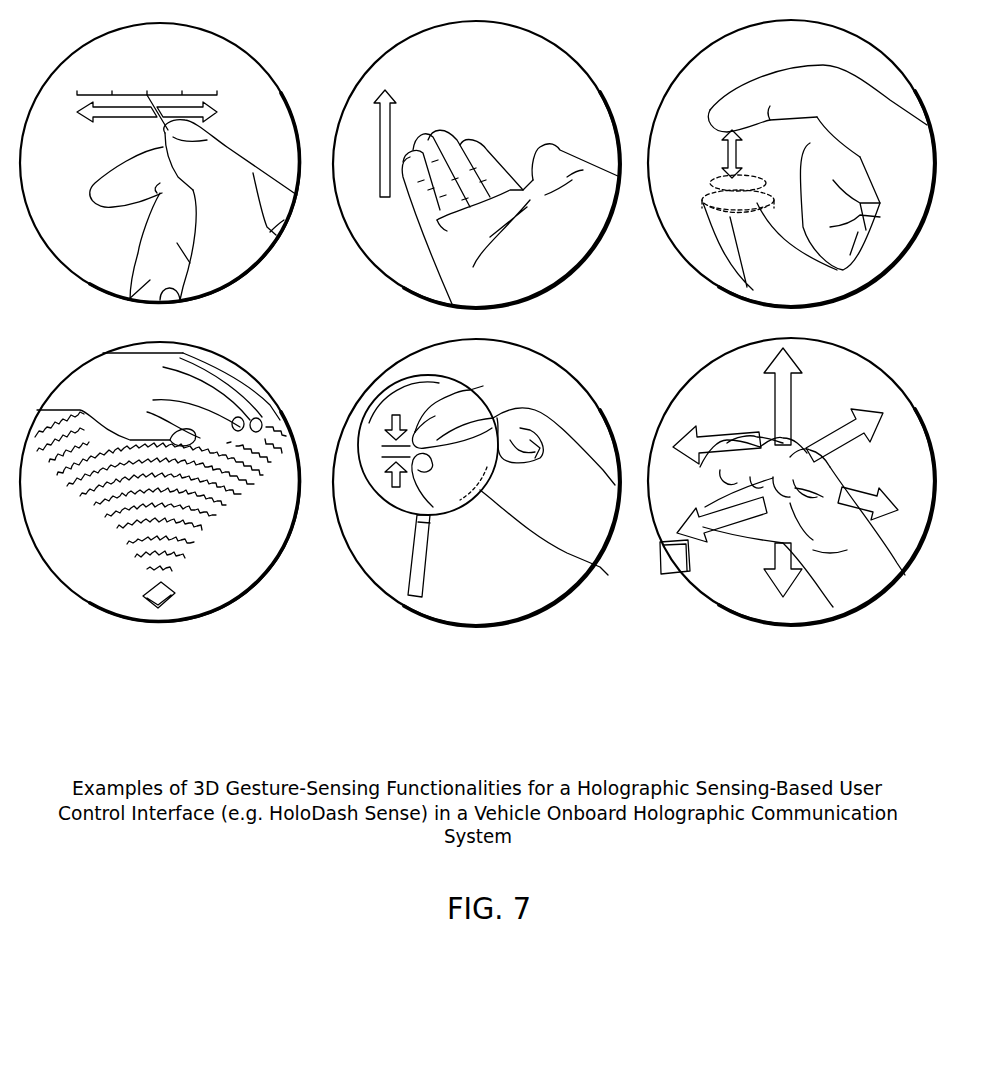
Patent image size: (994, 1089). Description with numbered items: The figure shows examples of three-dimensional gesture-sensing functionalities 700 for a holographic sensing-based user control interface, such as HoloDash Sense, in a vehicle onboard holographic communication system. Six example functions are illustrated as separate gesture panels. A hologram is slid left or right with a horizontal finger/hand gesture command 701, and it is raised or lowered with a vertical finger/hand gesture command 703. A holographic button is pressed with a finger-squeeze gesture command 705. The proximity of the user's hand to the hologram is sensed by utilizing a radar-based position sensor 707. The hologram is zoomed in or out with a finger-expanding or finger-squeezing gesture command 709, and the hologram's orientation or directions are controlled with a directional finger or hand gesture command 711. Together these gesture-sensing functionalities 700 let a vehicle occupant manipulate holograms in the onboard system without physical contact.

The three-dimensional gesture-sensing functionalities 700 is at (477, 375).
The horizontal finger/hand gesture command 701 is at (160, 163).
The vertical finger/hand gesture command 703 is at (476, 164).
The finger-squeeze gesture command 705 is at (791, 163).
The radar-based position sensor 707 is at (160, 482).
The finger-expanding or finger-squeezing gesture command 709 is at (476, 482).
The directional finger or hand gesture command 711 is at (791, 481).